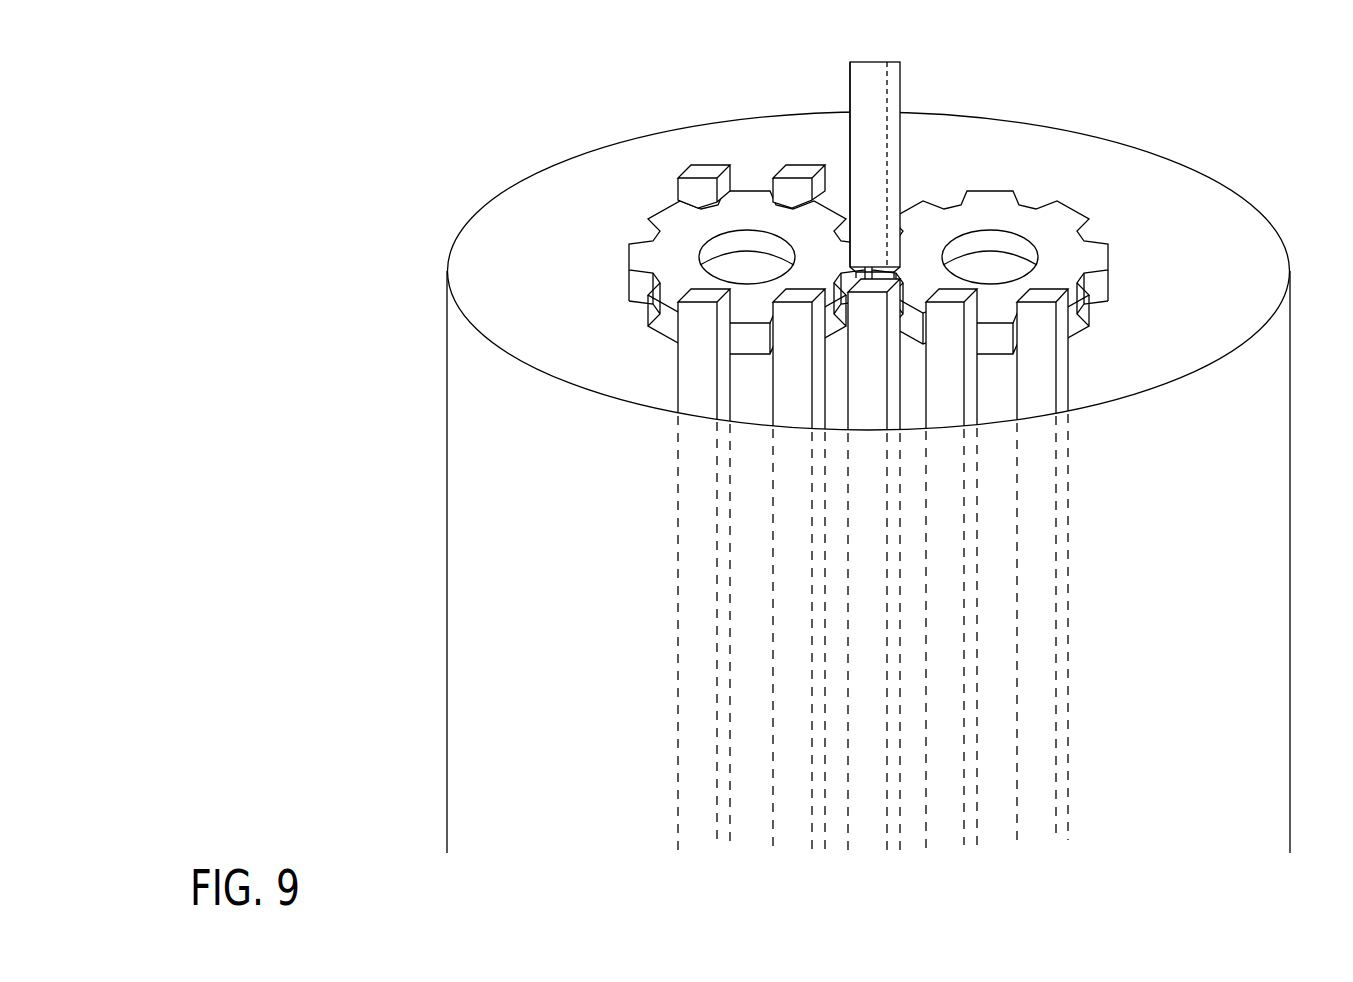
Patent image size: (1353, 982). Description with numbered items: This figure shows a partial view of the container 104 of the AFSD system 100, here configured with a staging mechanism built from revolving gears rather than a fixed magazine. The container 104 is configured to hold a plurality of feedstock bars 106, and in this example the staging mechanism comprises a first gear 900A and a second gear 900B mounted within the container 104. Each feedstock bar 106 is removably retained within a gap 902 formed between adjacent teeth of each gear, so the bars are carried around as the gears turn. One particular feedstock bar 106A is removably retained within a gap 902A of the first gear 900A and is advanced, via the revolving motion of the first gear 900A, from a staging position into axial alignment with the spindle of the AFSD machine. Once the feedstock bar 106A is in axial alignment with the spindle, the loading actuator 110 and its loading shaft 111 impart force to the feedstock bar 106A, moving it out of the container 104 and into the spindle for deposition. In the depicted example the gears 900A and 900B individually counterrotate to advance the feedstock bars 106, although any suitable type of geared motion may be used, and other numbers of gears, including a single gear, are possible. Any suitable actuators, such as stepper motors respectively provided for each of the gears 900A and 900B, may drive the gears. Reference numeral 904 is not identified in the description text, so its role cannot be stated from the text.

The AFSD system 100 is at (318, 230).
The container 104 is at (1291, 393).
The feedstock bars 106 is at (700, 172).
The feedstock bar 106A is at (850, 848).
The loading actuator 110 is at (920, 70).
The loading shaft 111 is at (850, 93).
The first gear 900A is at (1082, 177).
The second gear 900B is at (657, 177).
The gap 902 is at (636, 311).
The gap 902A is at (901, 277).
The tooth notches 904 is at (753, 188).